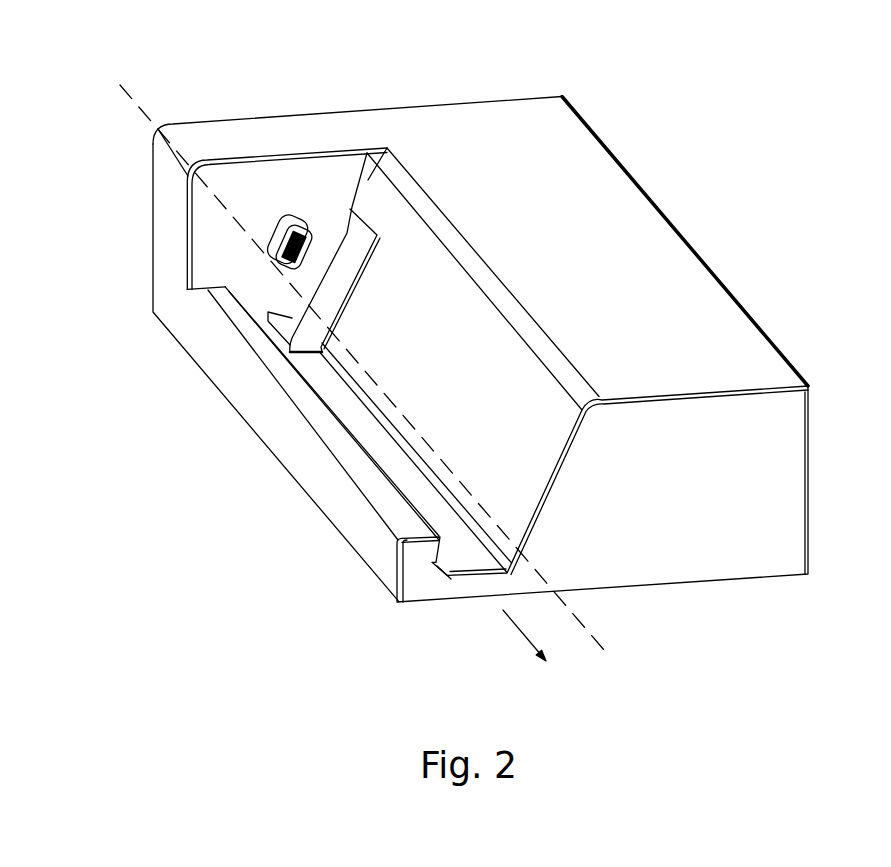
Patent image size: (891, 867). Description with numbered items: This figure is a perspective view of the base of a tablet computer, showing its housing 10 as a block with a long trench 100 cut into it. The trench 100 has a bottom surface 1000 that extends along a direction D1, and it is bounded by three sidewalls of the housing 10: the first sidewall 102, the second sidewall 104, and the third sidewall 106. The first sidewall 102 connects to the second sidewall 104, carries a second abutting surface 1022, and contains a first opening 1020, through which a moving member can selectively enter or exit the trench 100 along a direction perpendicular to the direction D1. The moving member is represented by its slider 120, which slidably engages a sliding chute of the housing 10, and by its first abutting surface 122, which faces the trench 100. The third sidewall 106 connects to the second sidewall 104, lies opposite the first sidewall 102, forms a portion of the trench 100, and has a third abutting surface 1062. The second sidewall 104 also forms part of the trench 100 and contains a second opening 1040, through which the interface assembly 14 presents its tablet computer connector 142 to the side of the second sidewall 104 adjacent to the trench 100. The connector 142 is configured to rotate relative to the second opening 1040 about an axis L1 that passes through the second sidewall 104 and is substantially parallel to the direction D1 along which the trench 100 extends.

The housing 10 is at (593, 182).
The trench 100 is at (465, 565).
The bottom surface 1000 is at (375, 443).
The first sidewall 102 is at (480, 313).
The first opening 1020 is at (316, 328).
The second abutting surface 1022 is at (417, 260).
The second sidewall 104 is at (230, 185).
The second opening 1040 is at (264, 230).
The third sidewall 106 is at (413, 562).
The third abutting surface 1062 is at (417, 549).
The interface assembly 14 is at (181, 206).
The tablet computer connector 142 is at (285, 243).
The slider 120 is at (363, 217).
The first abutting surface 122 is at (323, 274).
The direction D1 is at (532, 634).
The axis L1 is at (588, 627).